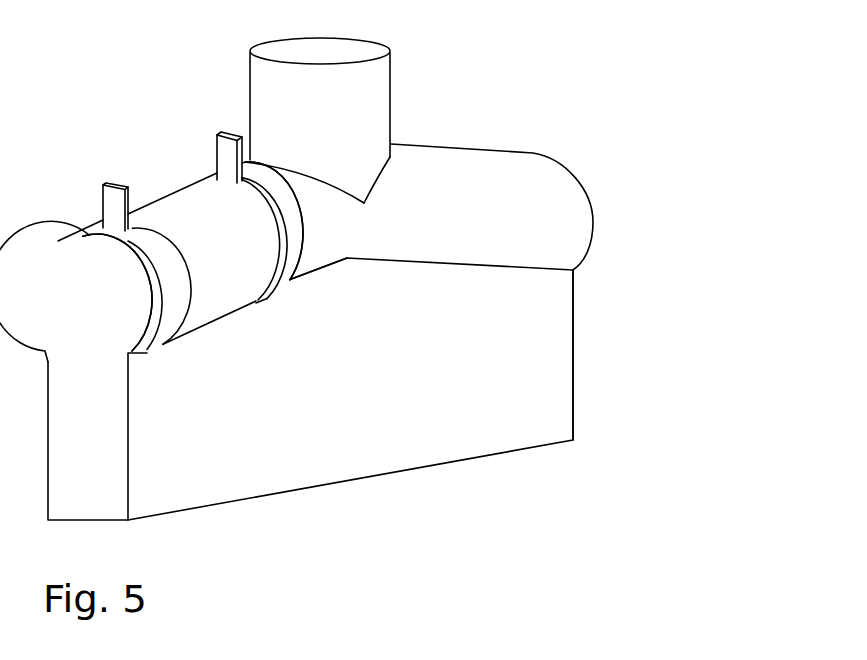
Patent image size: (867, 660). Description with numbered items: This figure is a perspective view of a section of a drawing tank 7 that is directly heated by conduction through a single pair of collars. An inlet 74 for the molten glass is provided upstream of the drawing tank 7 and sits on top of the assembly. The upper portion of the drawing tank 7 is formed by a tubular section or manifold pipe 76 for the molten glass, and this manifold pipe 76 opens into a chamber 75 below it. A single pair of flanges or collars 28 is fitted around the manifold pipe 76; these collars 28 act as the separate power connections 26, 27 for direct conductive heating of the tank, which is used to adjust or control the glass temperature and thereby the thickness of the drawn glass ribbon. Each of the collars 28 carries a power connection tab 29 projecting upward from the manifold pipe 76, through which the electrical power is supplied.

The drawing tank 7 is at (598, 274).
The power connection 26 is at (167, 347).
The power connection 27 is at (290, 288).
The collars 28 is at (193, 256).
The power connection tab 29 is at (215, 152).
The inlet 74 is at (390, 89).
The chamber 75 is at (573, 362).
The manifold pipe 76 is at (534, 149).